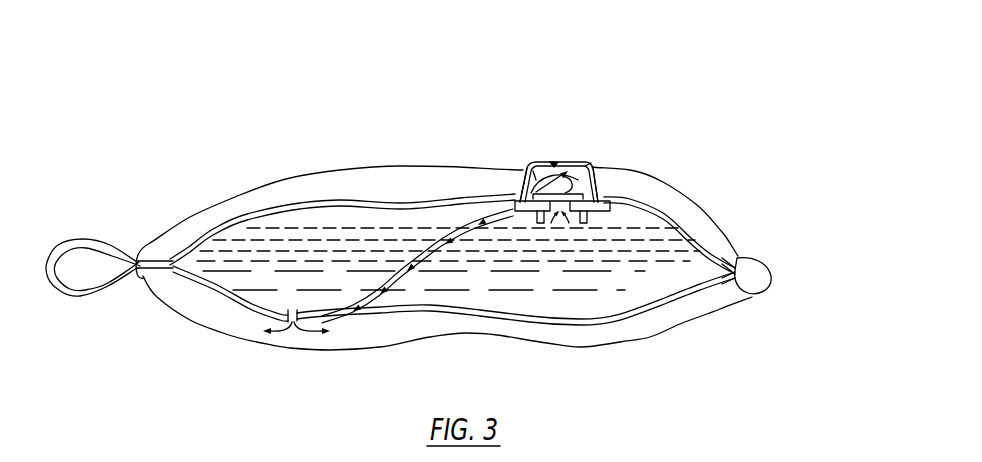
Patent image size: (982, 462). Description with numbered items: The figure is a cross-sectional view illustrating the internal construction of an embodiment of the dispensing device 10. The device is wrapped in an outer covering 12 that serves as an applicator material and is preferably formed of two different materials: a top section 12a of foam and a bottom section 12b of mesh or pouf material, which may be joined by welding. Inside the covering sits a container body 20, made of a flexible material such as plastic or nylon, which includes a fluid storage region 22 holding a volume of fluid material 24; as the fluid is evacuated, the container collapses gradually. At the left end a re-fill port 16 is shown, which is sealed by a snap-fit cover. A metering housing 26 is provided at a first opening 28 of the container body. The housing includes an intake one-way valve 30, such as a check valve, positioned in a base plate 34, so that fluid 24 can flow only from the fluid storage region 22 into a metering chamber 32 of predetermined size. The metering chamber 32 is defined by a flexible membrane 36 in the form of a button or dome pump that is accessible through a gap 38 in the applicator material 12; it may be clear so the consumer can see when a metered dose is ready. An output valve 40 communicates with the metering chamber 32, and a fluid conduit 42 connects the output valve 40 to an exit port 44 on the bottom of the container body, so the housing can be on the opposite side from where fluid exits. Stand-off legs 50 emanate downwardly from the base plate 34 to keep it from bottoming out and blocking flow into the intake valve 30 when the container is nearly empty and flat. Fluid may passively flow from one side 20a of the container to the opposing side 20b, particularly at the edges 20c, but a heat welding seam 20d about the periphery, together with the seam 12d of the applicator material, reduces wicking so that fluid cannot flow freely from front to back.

The dispensing device 10 is at (455, 212).
The outer covering 12 is at (478, 243).
The top section 12a is at (357, 174).
The bottom section 12b is at (653, 330).
The seam 12d is at (750, 273).
The re-fill port 16 is at (157, 258).
The container body 20 is at (517, 247).
The one side of the container 20a is at (697, 230).
The opposing side of the container 20b is at (690, 303).
The edges 20c is at (741, 260).
The heat welding seam 20d is at (744, 293).
The fluid storage region 22 is at (694, 297).
The fluid material 24 is at (593, 275).
The metering housing 26 is at (598, 155).
The first opening 28 is at (523, 186).
The intake one-way valve 30 is at (541, 212).
The metering chamber 32 is at (566, 165).
The base plate 34 is at (595, 181).
The flexible membrane 36 is at (543, 165).
The gap 38 is at (533, 184).
The output valve 40 is at (520, 200).
The fluid conduit 42 is at (393, 264).
The exit port 44 is at (297, 323).
The stand-off legs 50 is at (584, 214).